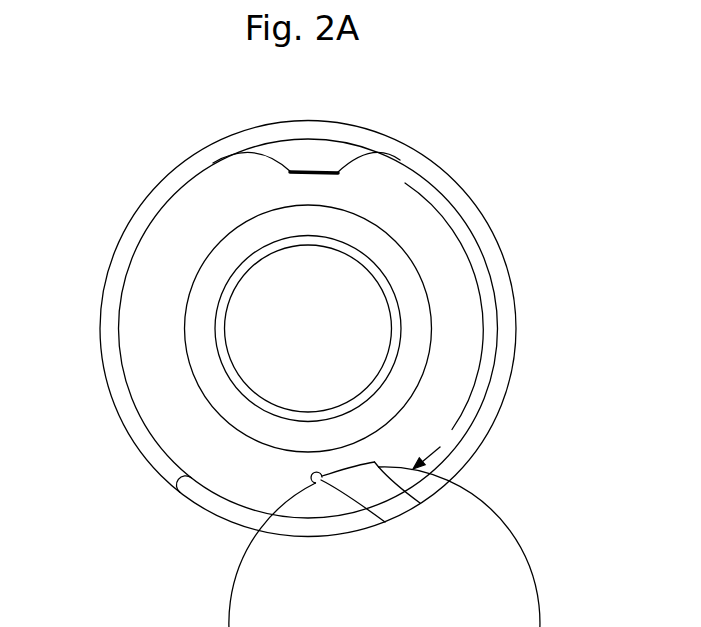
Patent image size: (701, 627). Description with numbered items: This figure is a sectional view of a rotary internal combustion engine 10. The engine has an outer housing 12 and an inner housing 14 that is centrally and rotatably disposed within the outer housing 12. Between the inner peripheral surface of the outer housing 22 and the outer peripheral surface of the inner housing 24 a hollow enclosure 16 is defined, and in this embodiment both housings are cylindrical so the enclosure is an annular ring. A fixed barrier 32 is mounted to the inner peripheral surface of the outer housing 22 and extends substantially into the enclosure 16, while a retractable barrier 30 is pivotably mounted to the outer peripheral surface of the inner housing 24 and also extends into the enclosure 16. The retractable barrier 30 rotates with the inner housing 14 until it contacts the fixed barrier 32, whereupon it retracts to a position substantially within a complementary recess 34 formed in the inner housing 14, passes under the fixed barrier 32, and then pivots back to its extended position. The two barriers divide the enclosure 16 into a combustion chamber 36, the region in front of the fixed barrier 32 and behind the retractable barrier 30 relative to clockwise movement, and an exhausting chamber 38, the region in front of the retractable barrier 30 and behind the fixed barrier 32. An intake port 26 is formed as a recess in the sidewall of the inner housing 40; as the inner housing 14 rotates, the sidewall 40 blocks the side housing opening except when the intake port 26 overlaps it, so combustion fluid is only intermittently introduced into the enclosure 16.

The rotary internal combustion engine 10 is at (177, 555).
The outer housing 12 is at (219, 150).
The inner housing 14 is at (203, 242).
The hollow enclosure 16 is at (453, 432).
The inner peripheral surface of the outer housing 22 is at (180, 486).
The outer peripheral surface of the inner housing 24 is at (263, 480).
The intake port 26 is at (400, 490).
The retractable barrier 30 is at (368, 490).
The fixed barrier 32 is at (322, 162).
The recess 34 is at (405, 484).
The combustion chamber 36 is at (490, 348).
The exhausting chamber 38 is at (143, 290).
The sidewall of the inner housing 40 is at (437, 278).